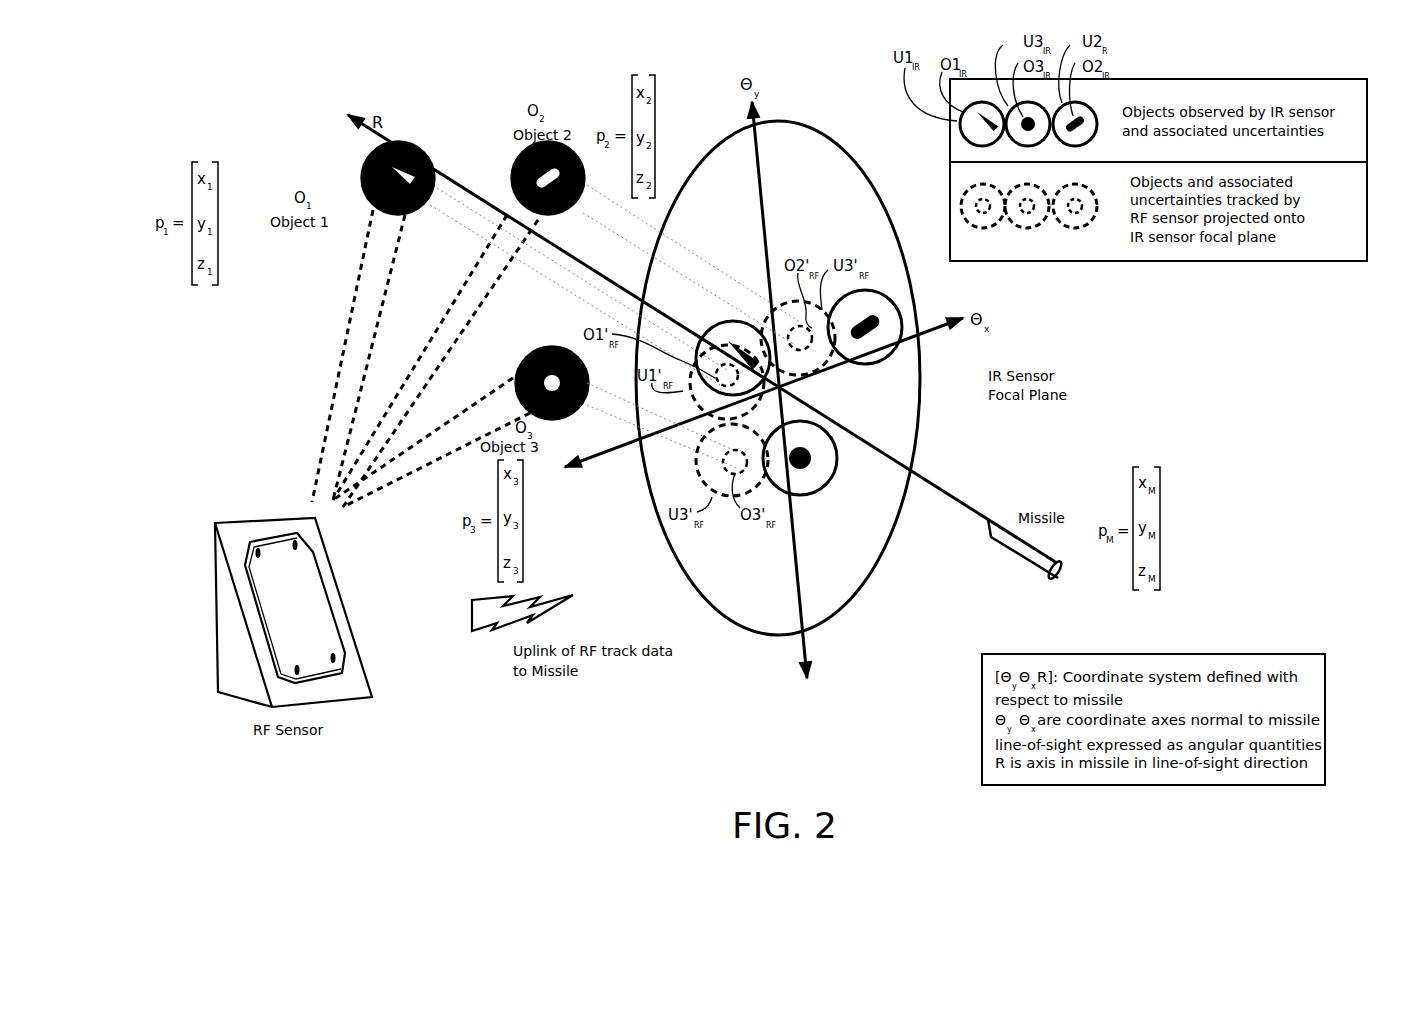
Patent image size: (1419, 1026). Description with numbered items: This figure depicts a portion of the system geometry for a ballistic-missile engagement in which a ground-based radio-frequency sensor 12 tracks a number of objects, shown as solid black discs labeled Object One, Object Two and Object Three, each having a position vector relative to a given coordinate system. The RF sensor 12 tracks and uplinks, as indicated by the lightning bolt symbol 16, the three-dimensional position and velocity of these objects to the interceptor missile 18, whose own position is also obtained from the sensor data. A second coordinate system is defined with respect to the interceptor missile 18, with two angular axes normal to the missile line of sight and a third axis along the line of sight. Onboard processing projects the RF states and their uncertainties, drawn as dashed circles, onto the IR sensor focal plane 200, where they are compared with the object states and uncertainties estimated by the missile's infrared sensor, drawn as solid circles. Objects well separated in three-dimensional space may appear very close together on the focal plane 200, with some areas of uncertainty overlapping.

The radio-frequency sensor 12 is at (358, 698).
The lightning bolt symbol 16 is at (472, 615).
The interceptor missile 18 is at (1010, 553).
The IR sensor focal plane 200 is at (918, 393).